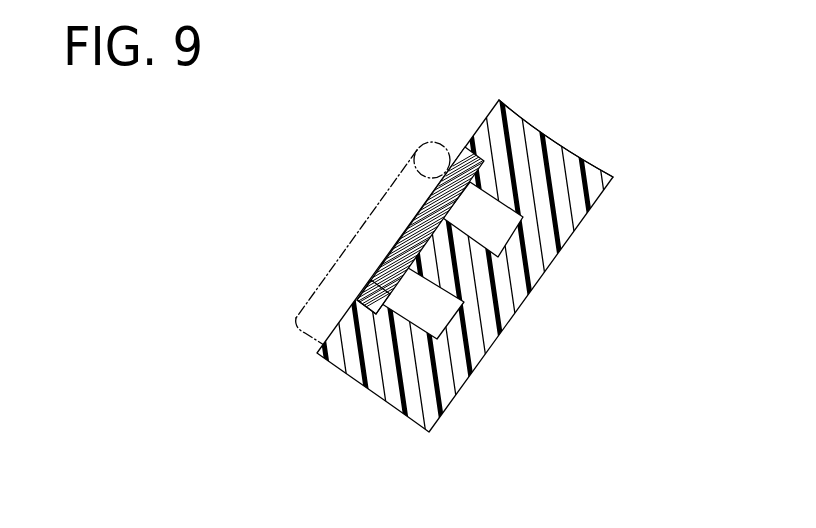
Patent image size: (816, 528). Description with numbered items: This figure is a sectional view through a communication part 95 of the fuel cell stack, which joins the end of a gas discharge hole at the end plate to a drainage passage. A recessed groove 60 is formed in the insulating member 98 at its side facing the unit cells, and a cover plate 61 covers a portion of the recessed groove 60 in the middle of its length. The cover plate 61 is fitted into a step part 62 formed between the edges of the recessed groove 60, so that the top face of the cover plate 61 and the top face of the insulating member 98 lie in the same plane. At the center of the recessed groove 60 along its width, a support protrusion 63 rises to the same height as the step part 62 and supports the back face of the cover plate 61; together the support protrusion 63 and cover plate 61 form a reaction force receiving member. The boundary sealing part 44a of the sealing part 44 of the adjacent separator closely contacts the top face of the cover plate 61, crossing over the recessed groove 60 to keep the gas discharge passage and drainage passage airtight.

The recessed groove 60 is at (473, 246).
The cover plate 61 is at (418, 210).
The step part 62 is at (370, 297).
The support protrusion 63 is at (463, 267).
The boundary sealing part 44a is at (333, 243).
The sealing part 44 is at (342, 252).
The communication part 95 is at (422, 300).
The insulating member 98 is at (581, 214).